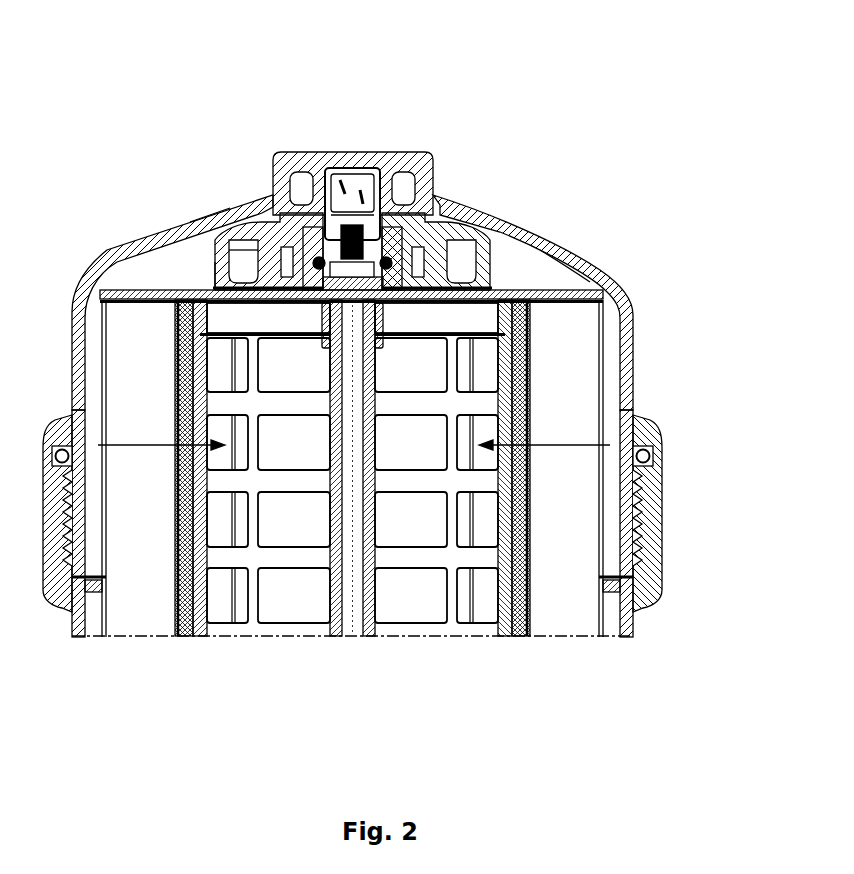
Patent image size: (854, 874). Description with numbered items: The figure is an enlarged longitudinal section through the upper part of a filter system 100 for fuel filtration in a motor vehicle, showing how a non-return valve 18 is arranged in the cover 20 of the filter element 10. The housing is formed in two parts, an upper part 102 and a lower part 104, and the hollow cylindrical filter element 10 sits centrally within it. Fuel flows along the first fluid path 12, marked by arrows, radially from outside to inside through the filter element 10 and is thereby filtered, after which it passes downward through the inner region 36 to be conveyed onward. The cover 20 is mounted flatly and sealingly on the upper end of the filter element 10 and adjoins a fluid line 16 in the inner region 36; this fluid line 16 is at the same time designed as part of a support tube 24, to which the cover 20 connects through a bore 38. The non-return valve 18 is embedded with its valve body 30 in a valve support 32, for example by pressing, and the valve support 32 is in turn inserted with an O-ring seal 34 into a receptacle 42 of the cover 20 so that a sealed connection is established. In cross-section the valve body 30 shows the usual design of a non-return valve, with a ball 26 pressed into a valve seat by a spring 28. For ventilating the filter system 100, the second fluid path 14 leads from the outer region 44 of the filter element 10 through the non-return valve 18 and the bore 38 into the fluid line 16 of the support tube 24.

The filter system 100 is at (636, 169).
The upper part 102 is at (636, 344).
The lower part 104 is at (660, 532).
The filter element 10 is at (147, 600).
The first fluid path 12 is at (143, 442).
The second fluid path 14 is at (440, 176).
The fluid line 16 is at (346, 625).
The non-return valve 18 is at (350, 172).
The cover 20 is at (490, 297).
The support tube 24 is at (377, 598).
The ball 26 is at (323, 202).
The spring 28 is at (217, 214).
The valve body 30 is at (290, 240).
The valve support 32 is at (285, 215).
The O-ring seal 34 is at (450, 208).
The inner region 36 is at (290, 588).
The bore 38 is at (353, 303).
The receptacle 42 is at (222, 270).
The outer region 44 is at (547, 270).